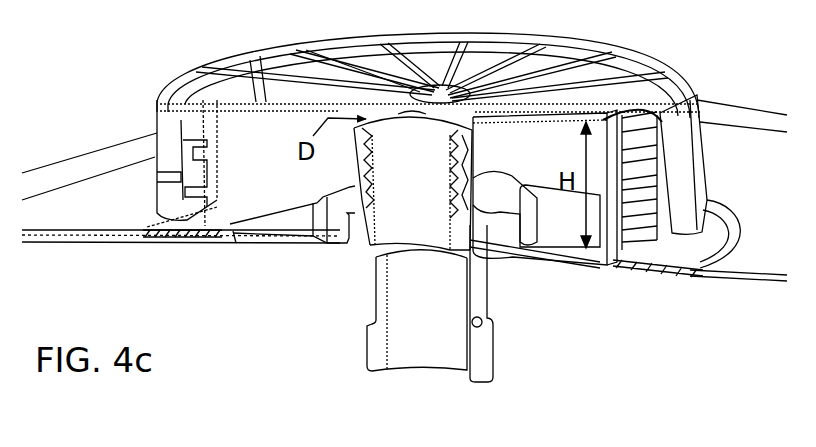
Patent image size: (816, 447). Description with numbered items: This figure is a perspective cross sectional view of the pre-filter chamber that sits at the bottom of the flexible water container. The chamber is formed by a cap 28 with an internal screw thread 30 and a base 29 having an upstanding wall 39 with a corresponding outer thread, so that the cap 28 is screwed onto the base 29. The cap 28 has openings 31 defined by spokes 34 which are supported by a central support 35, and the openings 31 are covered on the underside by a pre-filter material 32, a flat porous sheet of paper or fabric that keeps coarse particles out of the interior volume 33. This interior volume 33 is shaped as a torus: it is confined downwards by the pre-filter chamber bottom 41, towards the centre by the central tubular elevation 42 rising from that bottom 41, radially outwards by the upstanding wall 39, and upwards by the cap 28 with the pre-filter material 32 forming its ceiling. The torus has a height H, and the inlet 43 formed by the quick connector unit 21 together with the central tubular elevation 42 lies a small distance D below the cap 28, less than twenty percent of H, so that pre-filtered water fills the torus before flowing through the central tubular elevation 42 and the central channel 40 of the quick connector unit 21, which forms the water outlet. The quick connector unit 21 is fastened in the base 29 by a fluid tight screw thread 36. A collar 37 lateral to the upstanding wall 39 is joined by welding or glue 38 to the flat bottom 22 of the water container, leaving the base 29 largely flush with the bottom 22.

The quick connector unit 21 is at (484, 345).
The flat bottom of flexible water container 22 is at (60, 237).
The cap 28 is at (165, 110).
The base 29 is at (238, 262).
The thread 30 is at (197, 135).
The openings 31 is at (272, 86).
The pre-filter material 32 is at (254, 104).
The interior volume 33 is at (554, 166).
The spokes 34 is at (297, 96).
The central support 35 is at (432, 97).
The screw thread 36 is at (458, 196).
The collar 37 is at (173, 225).
The welding or glue 38 is at (167, 240).
The upstanding wall 39 is at (207, 170).
The central channel 40 is at (430, 345).
The pre-filter chamber bottom 41 is at (281, 245).
The central tubular elevation 42 is at (357, 172).
The water inlet 43 is at (410, 124).